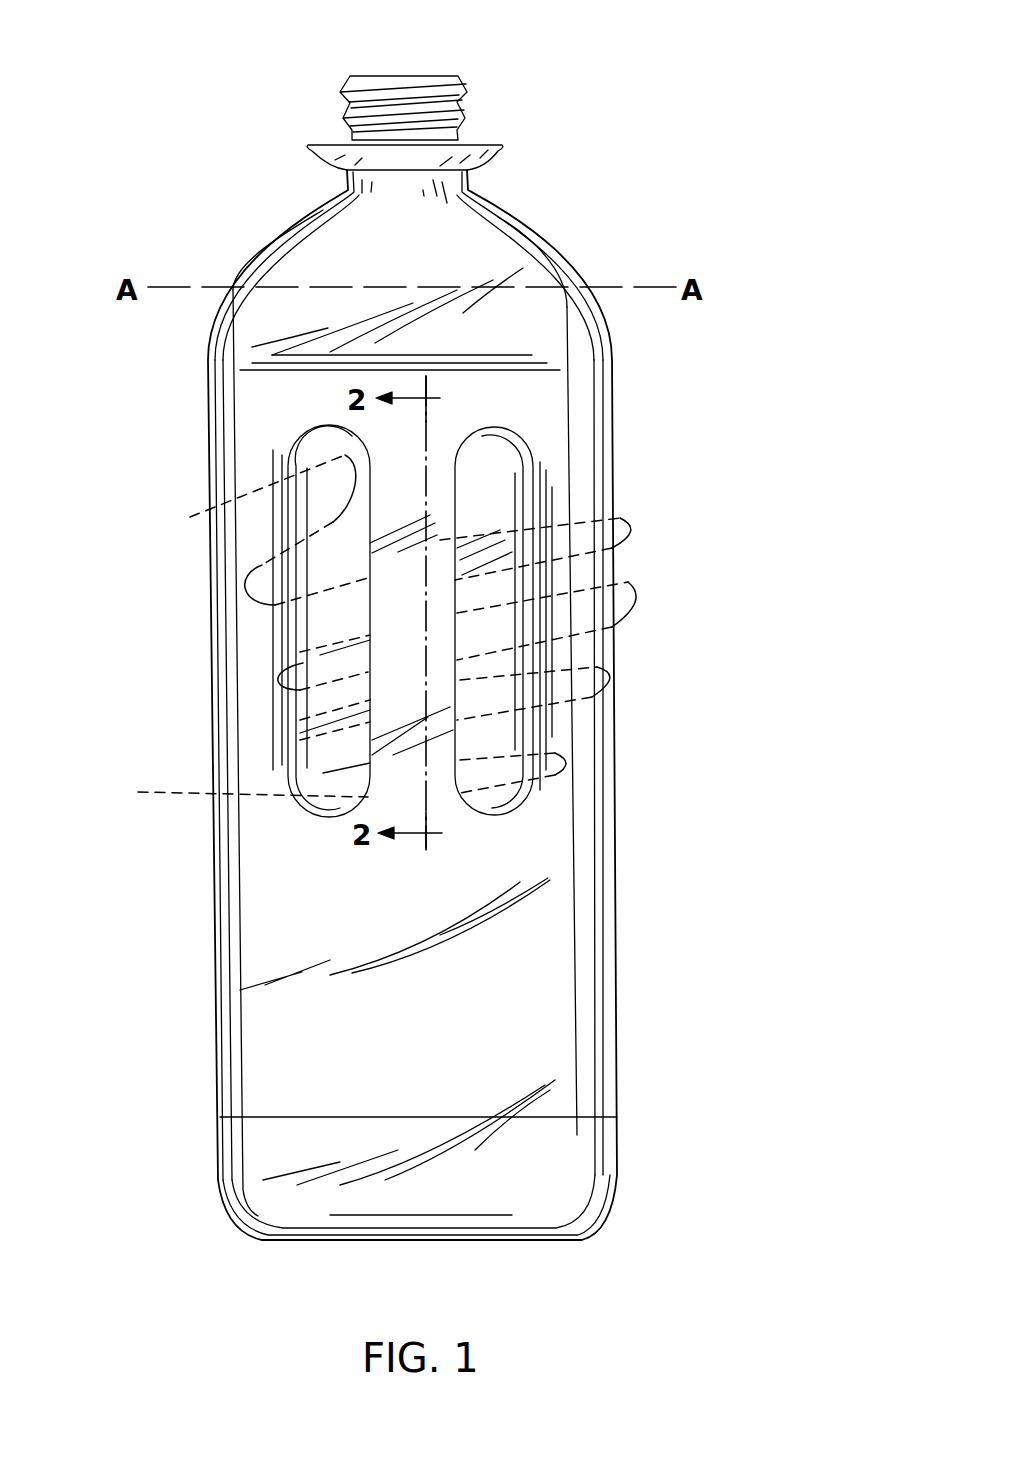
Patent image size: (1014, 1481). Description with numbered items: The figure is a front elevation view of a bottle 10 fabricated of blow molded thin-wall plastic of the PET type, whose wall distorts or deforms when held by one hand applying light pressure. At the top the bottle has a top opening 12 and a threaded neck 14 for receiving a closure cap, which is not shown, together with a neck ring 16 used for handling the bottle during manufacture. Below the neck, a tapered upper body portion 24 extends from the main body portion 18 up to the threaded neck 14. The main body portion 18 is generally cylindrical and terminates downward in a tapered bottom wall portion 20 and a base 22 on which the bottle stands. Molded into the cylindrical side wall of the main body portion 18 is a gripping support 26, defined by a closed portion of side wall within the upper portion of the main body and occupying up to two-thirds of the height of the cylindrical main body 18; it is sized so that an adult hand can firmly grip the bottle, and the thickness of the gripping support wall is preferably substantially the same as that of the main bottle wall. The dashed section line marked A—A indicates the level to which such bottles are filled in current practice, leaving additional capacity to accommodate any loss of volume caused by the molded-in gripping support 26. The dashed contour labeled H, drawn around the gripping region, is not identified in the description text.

The bottle 10 is at (733, 233).
The top opening 12 is at (454, 76).
The threaded neck 14 is at (467, 108).
The neck ring 16 is at (501, 146).
The main body portion 18 is at (664, 472).
The tapered bottom wall portion 20 is at (620, 1165).
The base 22 is at (383, 1241).
The tapered upper body portion 24 is at (582, 284).
The gripping support 26 is at (412, 618).
The hoop H is at (630, 580).